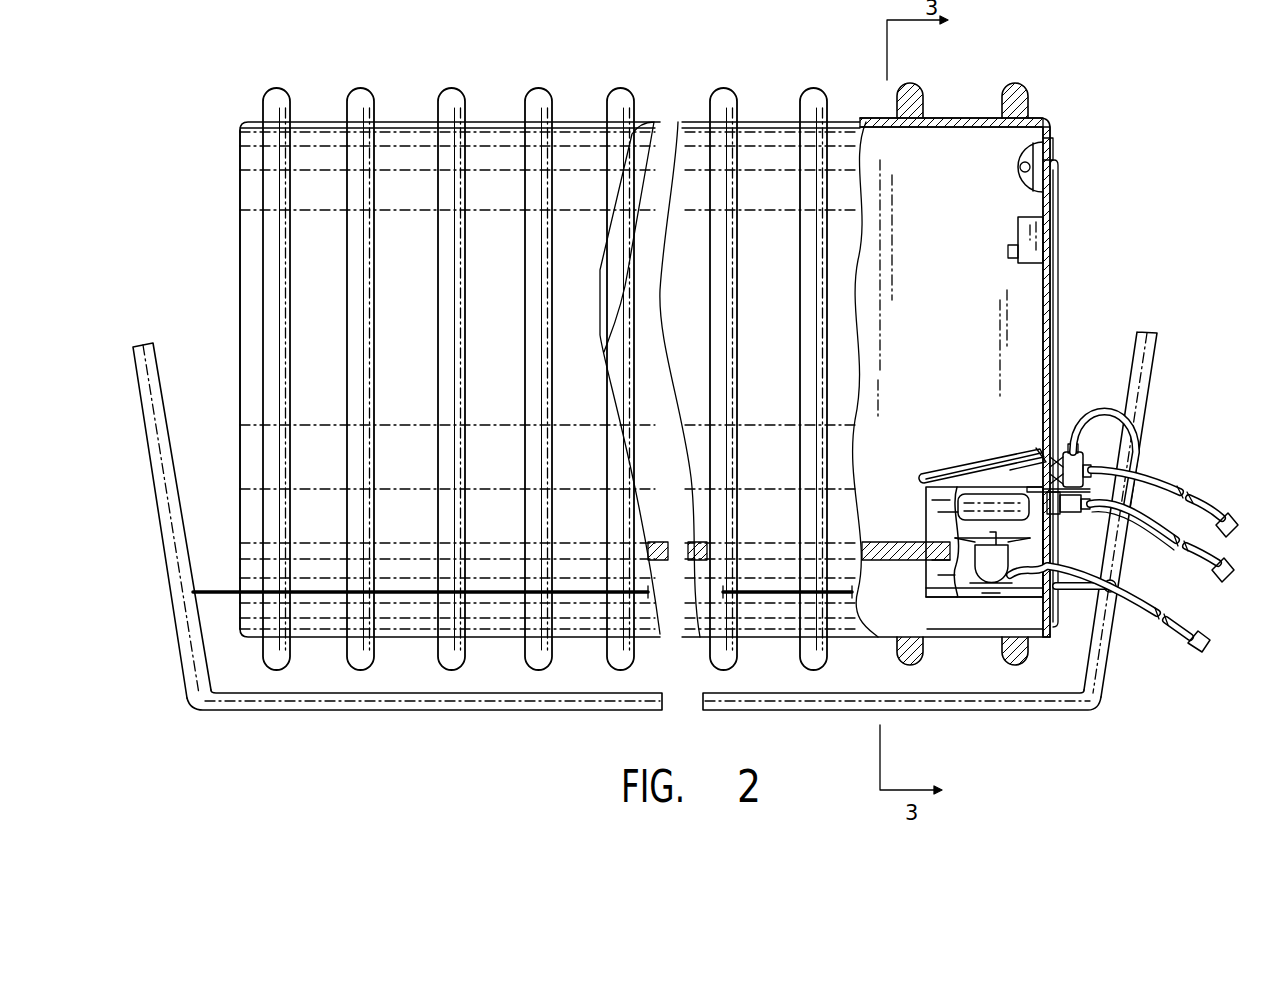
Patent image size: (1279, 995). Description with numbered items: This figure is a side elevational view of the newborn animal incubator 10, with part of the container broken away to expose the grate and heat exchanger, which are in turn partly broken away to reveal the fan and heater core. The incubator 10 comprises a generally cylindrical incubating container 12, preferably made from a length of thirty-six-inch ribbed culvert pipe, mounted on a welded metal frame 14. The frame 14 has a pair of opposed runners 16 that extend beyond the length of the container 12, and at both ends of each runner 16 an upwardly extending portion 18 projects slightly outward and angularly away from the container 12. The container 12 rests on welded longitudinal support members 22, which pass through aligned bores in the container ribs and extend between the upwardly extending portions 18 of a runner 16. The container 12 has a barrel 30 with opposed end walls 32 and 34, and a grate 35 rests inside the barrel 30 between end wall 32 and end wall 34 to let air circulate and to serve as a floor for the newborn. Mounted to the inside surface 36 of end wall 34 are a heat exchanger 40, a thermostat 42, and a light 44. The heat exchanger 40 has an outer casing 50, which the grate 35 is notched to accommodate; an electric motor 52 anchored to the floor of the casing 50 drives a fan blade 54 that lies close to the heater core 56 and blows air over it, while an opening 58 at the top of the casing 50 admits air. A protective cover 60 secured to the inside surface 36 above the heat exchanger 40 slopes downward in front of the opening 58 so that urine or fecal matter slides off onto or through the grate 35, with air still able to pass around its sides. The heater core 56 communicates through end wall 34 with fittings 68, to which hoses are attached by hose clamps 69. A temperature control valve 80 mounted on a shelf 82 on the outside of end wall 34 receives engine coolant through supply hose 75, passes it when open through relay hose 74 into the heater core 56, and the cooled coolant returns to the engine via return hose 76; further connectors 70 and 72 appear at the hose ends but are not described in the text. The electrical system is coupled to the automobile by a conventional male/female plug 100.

The newborn animal incubator 10 is at (318, 770).
The incubating container 12 is at (393, 120).
The frame 14 is at (372, 712).
The runners 16 is at (465, 700).
The upwardly extending portion 18 is at (157, 420).
The longitudinal support members 22 is at (200, 582).
The barrel 30 is at (320, 135).
The end wall 32 is at (238, 186).
The end wall 34 is at (1052, 152).
The grate 35 is at (888, 562).
The inside surface 36 is at (1056, 295).
The heat exchanger 40 is at (920, 487).
The thermostat 42 is at (1018, 236).
The light 44 is at (1025, 185).
The outer casing 50 is at (940, 598).
The electric motor 52 is at (985, 580).
The fan blade 54 is at (955, 530).
The heater core 56 is at (966, 494).
The opening 58 is at (1010, 468).
The protective cover 60 is at (980, 468).
The fittings 68 is at (1048, 535).
The hose clamps 69 is at (1079, 450).
The connector 70 is at (1236, 566).
The connector 72 is at (1238, 522).
The relay hose 74 is at (1112, 410).
The supply hose 75 is at (1176, 490).
The return hose 76 is at (1162, 545).
The temperature control valve 80 is at (1068, 446).
The shelf 82 is at (1120, 506).
The male/female plug 100 is at (1196, 654).